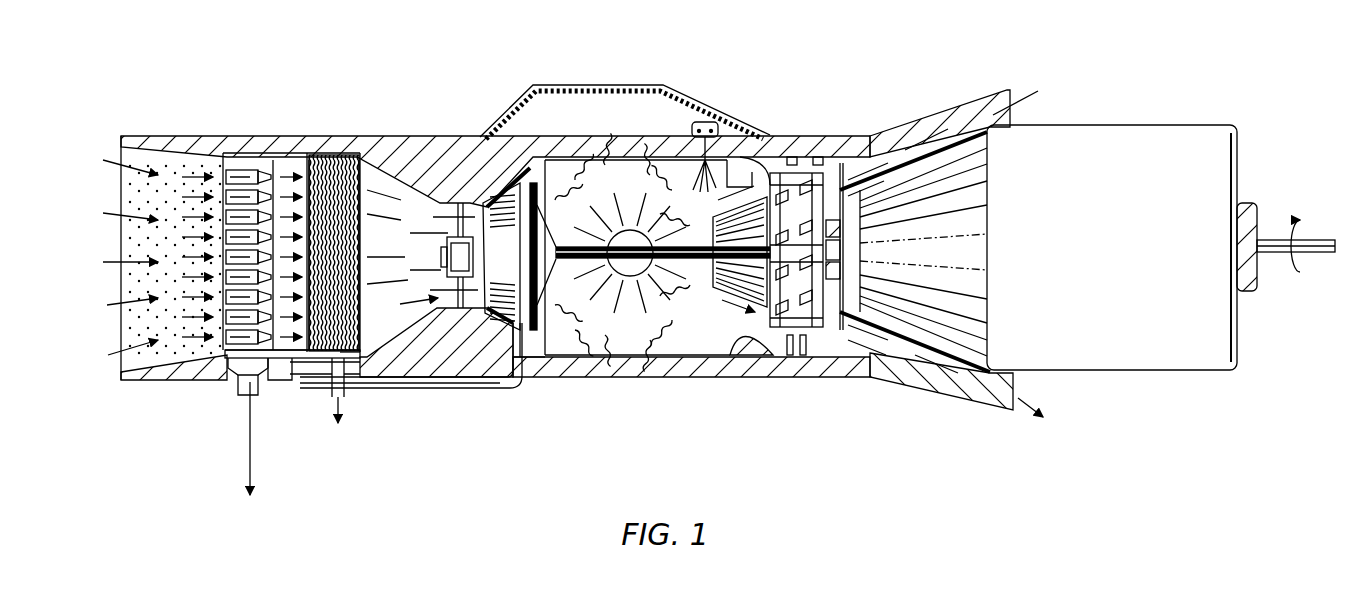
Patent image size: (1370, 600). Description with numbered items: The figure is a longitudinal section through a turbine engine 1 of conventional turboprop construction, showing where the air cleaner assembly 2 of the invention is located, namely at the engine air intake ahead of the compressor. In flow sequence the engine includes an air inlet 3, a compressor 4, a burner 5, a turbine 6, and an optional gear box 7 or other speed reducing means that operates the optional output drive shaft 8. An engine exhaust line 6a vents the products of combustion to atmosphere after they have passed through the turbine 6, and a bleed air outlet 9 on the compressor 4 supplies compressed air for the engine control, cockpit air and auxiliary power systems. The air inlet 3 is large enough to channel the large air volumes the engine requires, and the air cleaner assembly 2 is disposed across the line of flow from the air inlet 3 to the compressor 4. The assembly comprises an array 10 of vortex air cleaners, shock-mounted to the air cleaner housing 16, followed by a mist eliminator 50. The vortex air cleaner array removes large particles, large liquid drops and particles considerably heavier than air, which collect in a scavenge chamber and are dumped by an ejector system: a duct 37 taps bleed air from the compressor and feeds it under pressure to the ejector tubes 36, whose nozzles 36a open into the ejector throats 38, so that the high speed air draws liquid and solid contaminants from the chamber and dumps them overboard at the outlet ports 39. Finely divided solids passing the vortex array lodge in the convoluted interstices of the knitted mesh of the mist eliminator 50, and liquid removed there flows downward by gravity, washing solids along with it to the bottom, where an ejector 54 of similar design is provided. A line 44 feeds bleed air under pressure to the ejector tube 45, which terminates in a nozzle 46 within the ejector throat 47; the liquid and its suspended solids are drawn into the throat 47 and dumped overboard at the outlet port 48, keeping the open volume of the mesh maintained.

The turbine engine 1 is at (572, 434).
The air cleaner assembly 2 is at (341, 131).
The air inlet 3 is at (150, 158).
The compressor 4 is at (487, 193).
The burner 5 is at (642, 303).
The turbine 6 is at (787, 335).
The engine exhaust line 6a is at (967, 123).
The gear box 7 is at (1150, 353).
The output drive shaft 8 is at (1327, 240).
The bleed air outlet 9 is at (530, 357).
The array of vortex air cleaners 10 is at (224, 242).
The air cleaner housing 16 is at (240, 219).
The ejector tubes 36 is at (277, 354).
The nozzles 36a is at (235, 358).
The duct 37 is at (446, 390).
The ejector throats 38 is at (240, 383).
The outlet ports 39 is at (246, 390).
The line 44 is at (283, 383).
The ejector tube 45 is at (347, 352).
The nozzle 46 is at (349, 357).
The ejector throat 47 is at (345, 374).
The outlet port 48 is at (347, 397).
The mist eliminator 50 is at (360, 243).
The ejector 54 is at (345, 350).